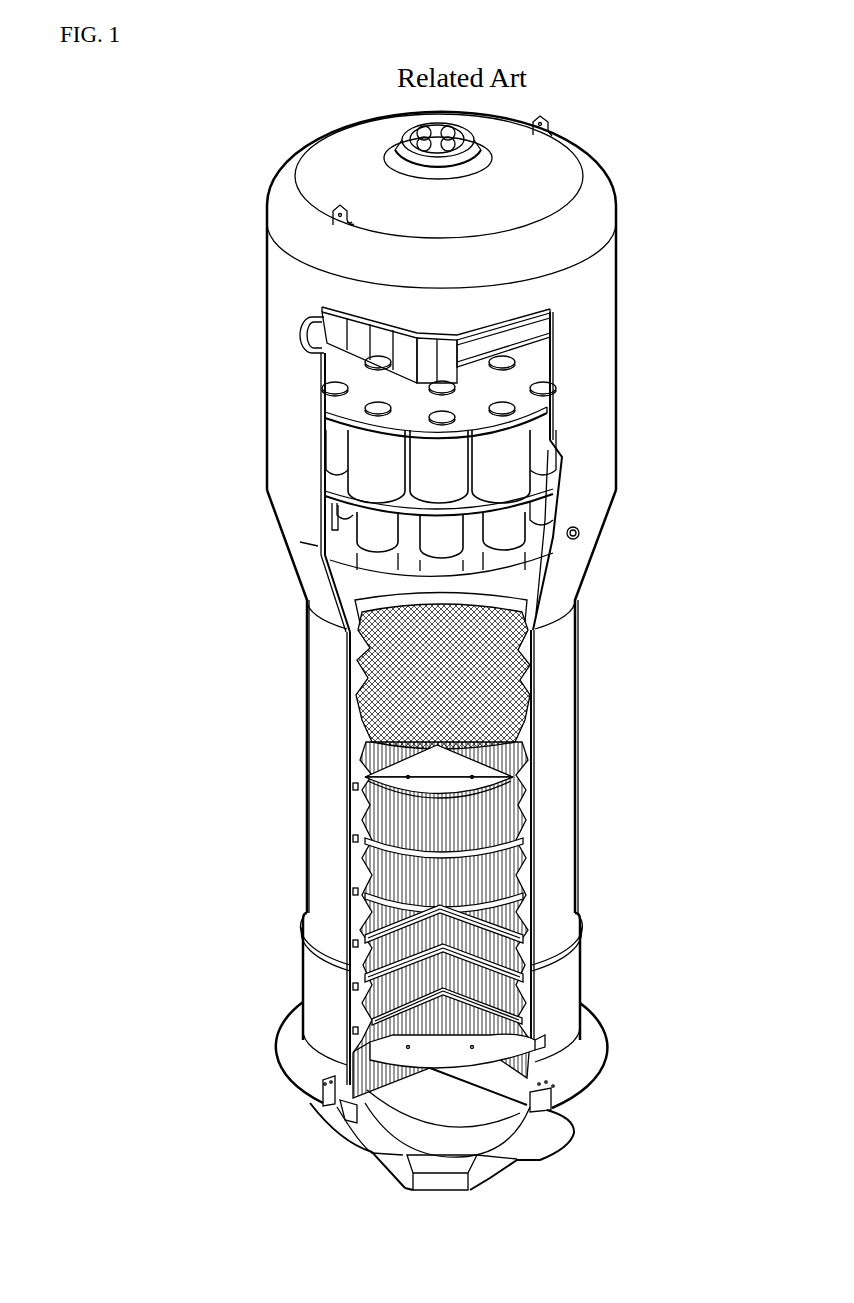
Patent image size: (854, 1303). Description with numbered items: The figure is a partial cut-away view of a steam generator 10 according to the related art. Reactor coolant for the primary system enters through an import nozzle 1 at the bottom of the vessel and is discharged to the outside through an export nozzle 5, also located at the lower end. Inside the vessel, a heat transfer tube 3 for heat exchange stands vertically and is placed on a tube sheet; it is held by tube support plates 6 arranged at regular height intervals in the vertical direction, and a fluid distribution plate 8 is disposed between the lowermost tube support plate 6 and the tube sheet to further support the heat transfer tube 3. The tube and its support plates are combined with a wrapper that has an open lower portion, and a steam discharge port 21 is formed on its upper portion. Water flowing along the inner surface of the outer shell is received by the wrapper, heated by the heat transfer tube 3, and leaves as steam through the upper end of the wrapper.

The steam generator 10 is at (652, 339).
The steam discharge port 21 is at (563, 455).
The heat transfer tube 3 is at (490, 805).
The tube support plates 6 is at (398, 1000).
The fluid distribution plate 8 is at (540, 1036).
The export nozzle 5 is at (577, 1116).
The import nozzle 1 is at (444, 1180).